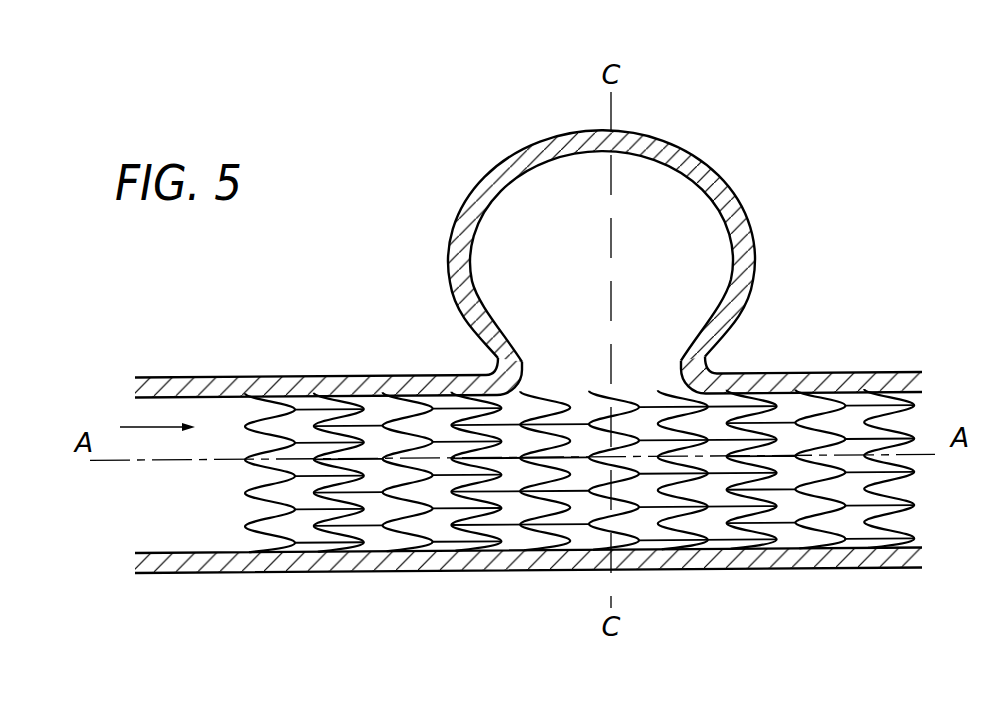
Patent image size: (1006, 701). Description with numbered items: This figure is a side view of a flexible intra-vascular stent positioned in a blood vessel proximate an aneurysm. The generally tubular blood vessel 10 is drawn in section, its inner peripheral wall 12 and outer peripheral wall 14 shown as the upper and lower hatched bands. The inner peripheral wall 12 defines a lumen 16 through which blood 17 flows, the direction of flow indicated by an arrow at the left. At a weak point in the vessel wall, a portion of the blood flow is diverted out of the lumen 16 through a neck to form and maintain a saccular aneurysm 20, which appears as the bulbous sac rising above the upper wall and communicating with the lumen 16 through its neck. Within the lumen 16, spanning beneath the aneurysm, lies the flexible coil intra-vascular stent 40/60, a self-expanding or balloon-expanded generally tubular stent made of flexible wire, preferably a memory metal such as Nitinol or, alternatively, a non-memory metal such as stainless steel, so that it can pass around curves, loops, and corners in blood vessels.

The blood vessel 10 is at (818, 262).
The inner peripheral wall 12 is at (172, 553).
The outer peripheral wall 14 is at (273, 377).
The lumen 16 is at (165, 503).
The blood 17 is at (133, 427).
The saccular aneurysm 20 is at (527, 190).
The flexible coil intra-vascular stent 40 is at (579, 441).
The flexible coil intra-vascular stent 60 is at (403, 417).